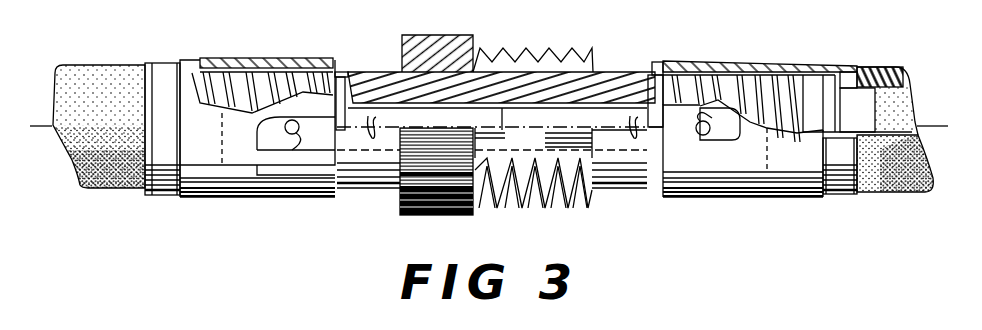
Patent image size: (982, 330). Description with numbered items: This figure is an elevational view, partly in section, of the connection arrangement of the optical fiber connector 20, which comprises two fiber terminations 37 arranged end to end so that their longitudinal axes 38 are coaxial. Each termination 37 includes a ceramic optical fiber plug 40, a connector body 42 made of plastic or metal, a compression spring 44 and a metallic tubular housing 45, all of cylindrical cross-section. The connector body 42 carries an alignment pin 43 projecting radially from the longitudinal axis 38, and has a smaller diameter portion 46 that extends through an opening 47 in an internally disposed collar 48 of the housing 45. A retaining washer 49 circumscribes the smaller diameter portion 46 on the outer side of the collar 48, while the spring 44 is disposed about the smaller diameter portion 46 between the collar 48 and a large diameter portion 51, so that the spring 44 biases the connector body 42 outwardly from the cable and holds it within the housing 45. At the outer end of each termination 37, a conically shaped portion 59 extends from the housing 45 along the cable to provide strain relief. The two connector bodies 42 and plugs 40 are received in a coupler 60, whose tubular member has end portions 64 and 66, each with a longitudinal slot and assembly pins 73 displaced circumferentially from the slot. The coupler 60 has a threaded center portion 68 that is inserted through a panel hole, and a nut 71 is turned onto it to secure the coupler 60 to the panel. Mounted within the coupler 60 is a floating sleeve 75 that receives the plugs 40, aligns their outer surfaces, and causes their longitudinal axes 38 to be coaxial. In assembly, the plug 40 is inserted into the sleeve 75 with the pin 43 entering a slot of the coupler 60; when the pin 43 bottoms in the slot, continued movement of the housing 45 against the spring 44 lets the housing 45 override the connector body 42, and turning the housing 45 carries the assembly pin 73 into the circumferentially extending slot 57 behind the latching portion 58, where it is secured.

The connector 20 is at (297, 235).
The fiber termination 37 is at (177, 206).
The longitudinal axis 38 is at (37, 128).
The plug 40 is at (492, 147).
The connector body 42 is at (660, 147).
The alignment pin 43 is at (342, 64).
The compression spring 44 is at (203, 100).
The tubular housing 45 is at (245, 58).
The smaller diameter portion 46 is at (235, 100).
The opening 47 is at (847, 73).
The collar 48 is at (815, 75).
The retaining washer 49 is at (830, 120).
The large diameter portion 51 is at (679, 69).
The circumferentially extending slot 57 is at (285, 122).
The latching portion 58 is at (297, 148).
The strain relief portion 59 is at (95, 64).
The coupler 60 is at (398, 226).
The end portion 64 is at (355, 70).
The end portion 66 is at (600, 72).
The center portion 68 is at (523, 200).
The nut 71 is at (430, 220).
The assembly pin 73 is at (297, 125).
The sleeve 75 is at (487, 59).